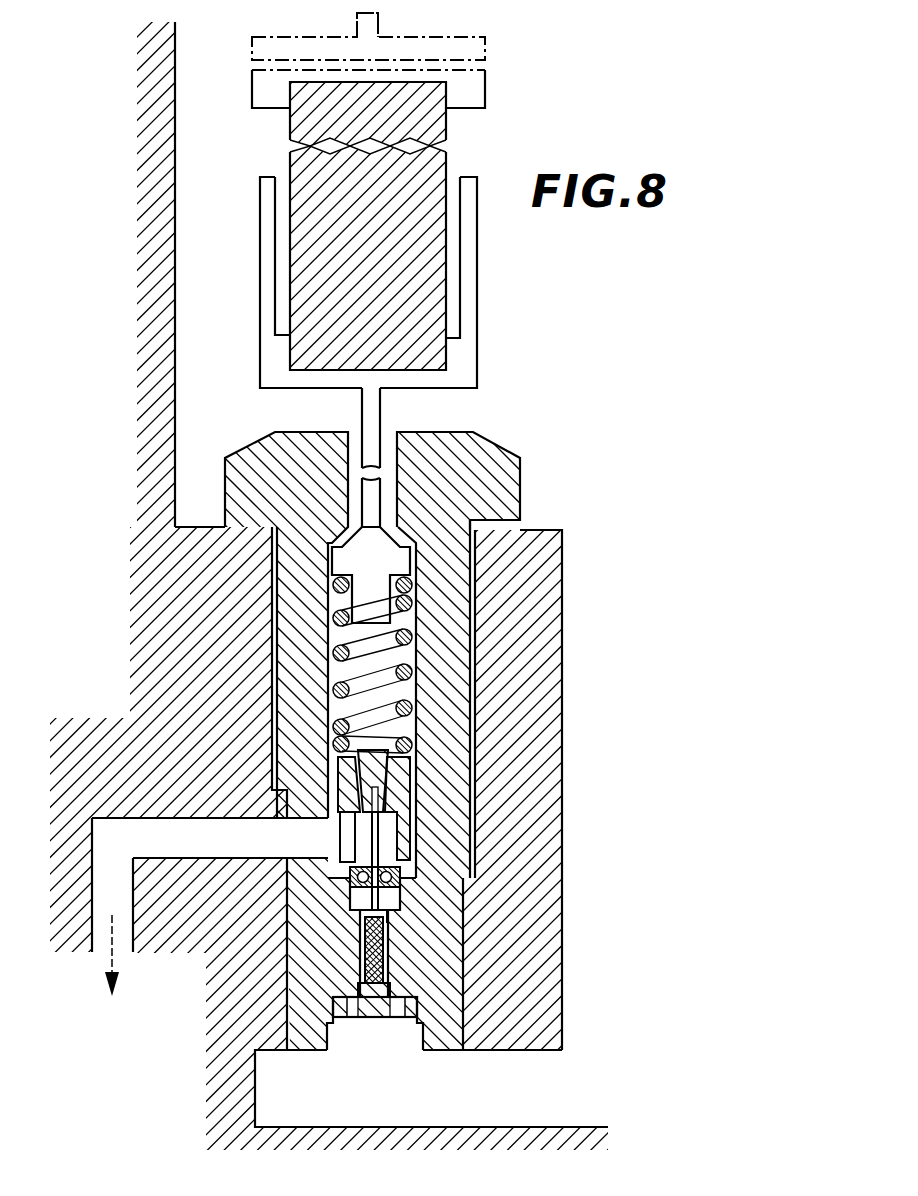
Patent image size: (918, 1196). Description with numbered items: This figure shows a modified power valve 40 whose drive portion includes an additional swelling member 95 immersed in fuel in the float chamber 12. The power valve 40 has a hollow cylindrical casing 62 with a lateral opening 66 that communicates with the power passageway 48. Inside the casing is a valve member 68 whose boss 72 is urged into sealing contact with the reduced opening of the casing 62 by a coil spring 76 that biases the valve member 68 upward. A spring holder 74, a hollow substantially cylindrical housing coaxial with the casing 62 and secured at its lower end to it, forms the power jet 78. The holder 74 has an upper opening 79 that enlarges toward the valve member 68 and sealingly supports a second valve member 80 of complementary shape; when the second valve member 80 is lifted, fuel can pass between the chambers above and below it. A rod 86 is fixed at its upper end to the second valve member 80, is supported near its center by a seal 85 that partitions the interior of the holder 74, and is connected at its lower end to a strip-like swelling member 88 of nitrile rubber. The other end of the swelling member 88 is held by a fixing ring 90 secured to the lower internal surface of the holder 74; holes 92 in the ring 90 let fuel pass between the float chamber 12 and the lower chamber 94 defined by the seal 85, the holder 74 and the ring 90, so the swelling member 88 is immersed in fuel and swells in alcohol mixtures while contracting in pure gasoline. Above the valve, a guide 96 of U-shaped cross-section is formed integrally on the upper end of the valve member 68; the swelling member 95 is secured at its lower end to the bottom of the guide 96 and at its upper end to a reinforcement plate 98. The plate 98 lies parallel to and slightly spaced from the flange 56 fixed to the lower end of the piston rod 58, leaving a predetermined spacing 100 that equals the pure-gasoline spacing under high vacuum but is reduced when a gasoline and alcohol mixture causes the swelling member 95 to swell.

The float chamber 12 is at (612, 705).
The power valve 40 is at (522, 470).
The power passageway 48 is at (112, 830).
The flange 56 is at (256, 48).
The piston rod 58 is at (416, 18).
The hollow cylindrical casing 62 is at (250, 458).
The lateral opening 66 is at (298, 854).
The valve member 68 is at (370, 408).
The boss 72 is at (342, 561).
The spring holder 74 is at (410, 942).
The coil spring 76 is at (338, 654).
The power jet 78 is at (428, 799).
The upper opening 79 is at (410, 770).
The second valve member 80 is at (372, 752).
The seal 85 is at (405, 873).
The rod 86 is at (376, 840).
The swelling member 88 is at (398, 990).
The fixing ring 90 is at (372, 1022).
The holes 92 is at (350, 1022).
The lower chamber 94 is at (357, 940).
The swelling member 95 is at (296, 170).
The guide 96 is at (268, 240).
The reinforcement plate 98 is at (254, 93).
The predetermined spacing 100 is at (478, 64).